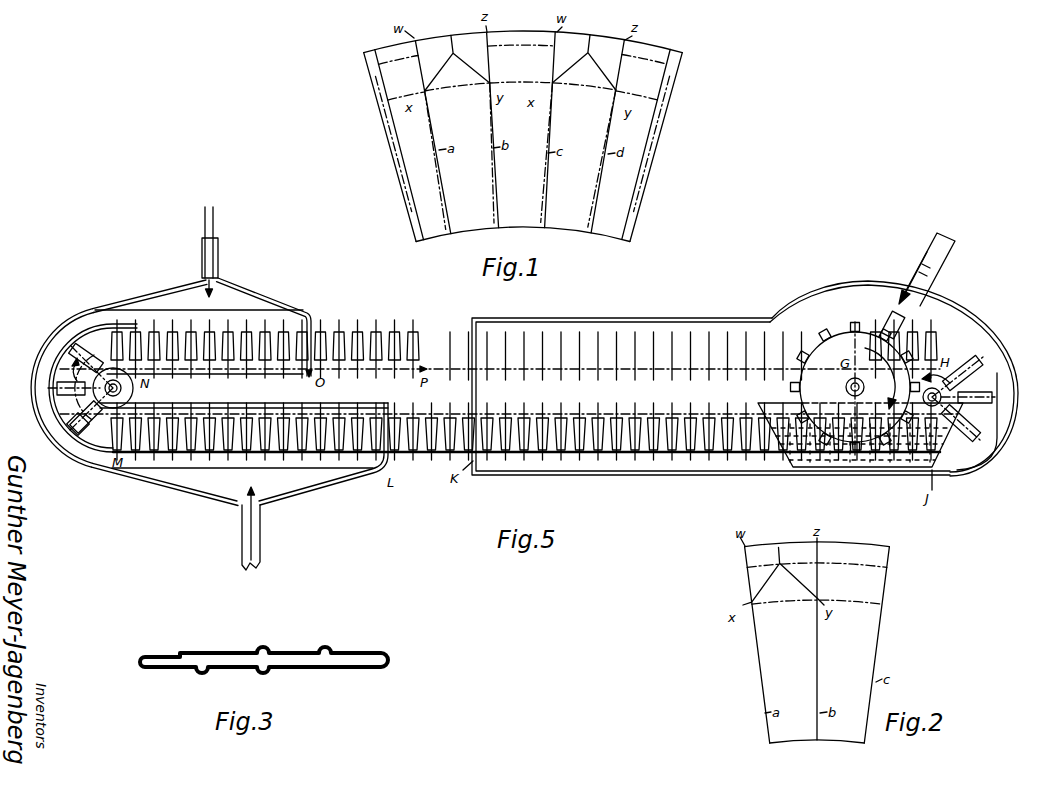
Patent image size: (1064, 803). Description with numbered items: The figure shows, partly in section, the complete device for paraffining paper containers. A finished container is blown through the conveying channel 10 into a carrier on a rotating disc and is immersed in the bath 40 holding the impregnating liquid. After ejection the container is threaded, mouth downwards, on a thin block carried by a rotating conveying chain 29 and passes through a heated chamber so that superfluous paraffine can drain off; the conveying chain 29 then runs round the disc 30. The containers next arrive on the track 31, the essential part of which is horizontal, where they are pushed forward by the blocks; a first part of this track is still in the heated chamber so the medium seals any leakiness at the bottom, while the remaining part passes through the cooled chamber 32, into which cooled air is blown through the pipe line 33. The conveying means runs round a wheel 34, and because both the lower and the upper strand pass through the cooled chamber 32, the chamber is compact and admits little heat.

The conveying channel 10 is at (953, 247).
The rotating conveying chain 29 is at (455, 368).
The disc 30 is at (947, 387).
The track 31 is at (545, 455).
The cooled chamber 32 is at (250, 302).
The pipe line 33 is at (202, 241).
The wheel 34 is at (100, 400).
The bath 40 is at (845, 467).